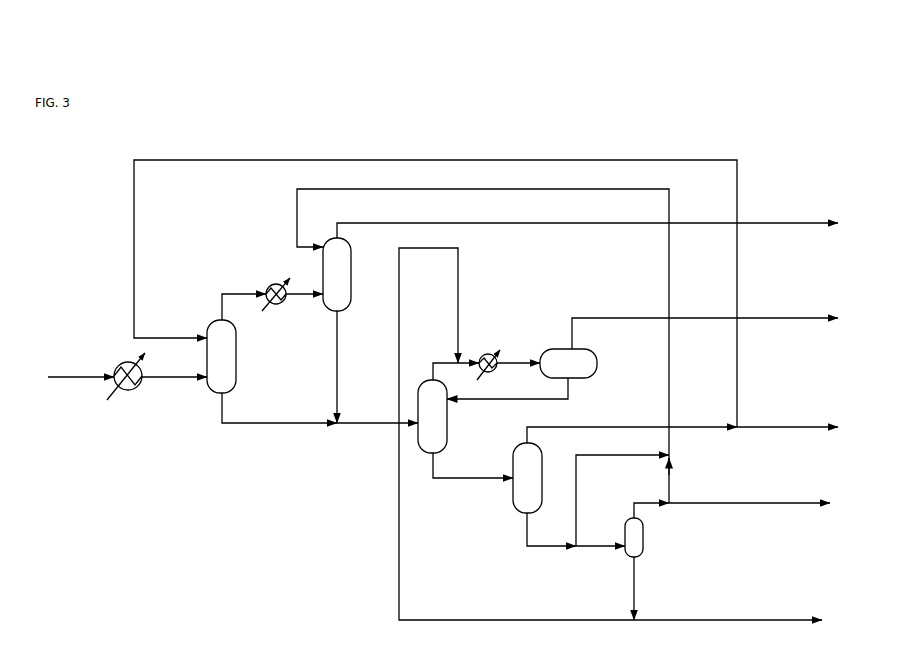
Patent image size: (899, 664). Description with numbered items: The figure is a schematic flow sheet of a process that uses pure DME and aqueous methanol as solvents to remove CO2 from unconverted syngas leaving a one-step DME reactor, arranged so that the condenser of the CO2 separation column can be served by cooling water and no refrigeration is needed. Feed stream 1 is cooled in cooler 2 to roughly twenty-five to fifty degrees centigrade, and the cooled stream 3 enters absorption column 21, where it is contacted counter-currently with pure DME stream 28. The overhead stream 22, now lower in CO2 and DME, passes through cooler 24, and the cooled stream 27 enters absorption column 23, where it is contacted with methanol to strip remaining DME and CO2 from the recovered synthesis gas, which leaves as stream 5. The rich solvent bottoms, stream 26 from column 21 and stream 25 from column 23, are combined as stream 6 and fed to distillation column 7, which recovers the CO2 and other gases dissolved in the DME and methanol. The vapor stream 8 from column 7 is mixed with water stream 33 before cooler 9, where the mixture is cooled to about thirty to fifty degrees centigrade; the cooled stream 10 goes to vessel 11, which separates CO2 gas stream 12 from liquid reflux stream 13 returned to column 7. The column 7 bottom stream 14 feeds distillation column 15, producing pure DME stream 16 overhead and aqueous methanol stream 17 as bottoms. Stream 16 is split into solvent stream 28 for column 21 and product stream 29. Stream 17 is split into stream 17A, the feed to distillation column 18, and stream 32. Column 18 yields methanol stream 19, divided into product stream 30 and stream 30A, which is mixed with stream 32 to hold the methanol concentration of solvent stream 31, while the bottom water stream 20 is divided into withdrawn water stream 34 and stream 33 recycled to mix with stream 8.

The stream 1 is at (66, 374).
The cooler 2 is at (126, 379).
The cooled stream 3 is at (159, 374).
The absorption column 21 is at (238, 356).
The stream 22 is at (231, 290).
The cooler 24 is at (276, 301).
The cooled stream 27 is at (296, 299).
The absorption column 23 is at (353, 271).
The stream 28 is at (436, 158).
The stream 31 is at (486, 186).
The product stream 5 is at (768, 220).
The stream 25 is at (339, 354).
The stream 26 is at (276, 421).
The stream 6 is at (372, 420).
The distillation column 7 is at (449, 432).
The vapor stream 8 is at (446, 360).
The cooler 9 is at (488, 370).
The cooled stream 10 is at (518, 360).
The vessel 11 is at (598, 367).
The CO2 gas stream 12 is at (613, 315).
The reflux stream 13 is at (525, 402).
The bottom stream 14 is at (490, 481).
The distillation column 15 is at (544, 484).
The DME stream 16 is at (599, 423).
The stream 29 is at (769, 424).
The aqueous methanol stream 17 is at (552, 549).
The stream 17A is at (583, 544).
The stream 32 is at (624, 458).
The distillation column 18 is at (663, 527).
The methanol stream 19 is at (646, 500).
The stream 30 is at (759, 500).
The stream 30A is at (672, 480).
The bottom water stream 20 is at (632, 582).
The water stream 33 is at (516, 623).
The stream 34 is at (731, 617).